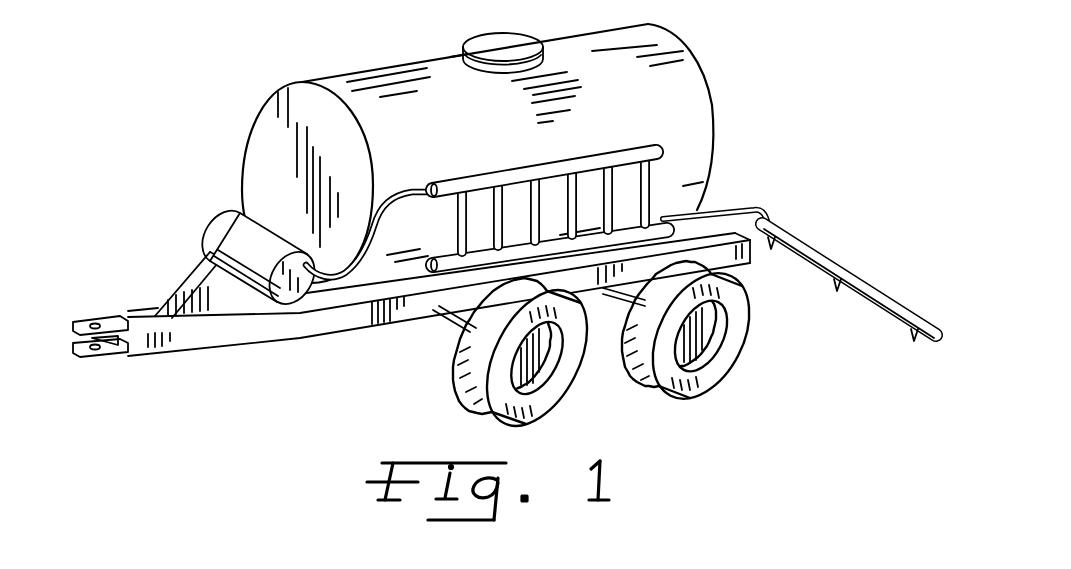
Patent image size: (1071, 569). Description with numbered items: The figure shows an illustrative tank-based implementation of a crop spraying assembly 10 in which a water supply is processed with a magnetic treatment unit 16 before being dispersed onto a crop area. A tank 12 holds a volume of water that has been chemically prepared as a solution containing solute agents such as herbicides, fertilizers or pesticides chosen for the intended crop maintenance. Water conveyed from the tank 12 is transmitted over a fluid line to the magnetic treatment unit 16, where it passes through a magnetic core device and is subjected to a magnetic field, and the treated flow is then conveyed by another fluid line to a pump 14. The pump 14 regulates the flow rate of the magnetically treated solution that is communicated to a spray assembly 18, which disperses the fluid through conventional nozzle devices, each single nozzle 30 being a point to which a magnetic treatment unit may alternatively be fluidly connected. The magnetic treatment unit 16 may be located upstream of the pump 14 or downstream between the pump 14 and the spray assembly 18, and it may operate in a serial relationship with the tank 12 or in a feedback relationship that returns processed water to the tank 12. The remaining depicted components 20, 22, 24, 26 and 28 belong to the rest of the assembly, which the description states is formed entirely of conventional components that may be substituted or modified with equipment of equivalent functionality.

The sprayer trailer 10 is at (742, 69).
The tank 12 is at (393, 88).
The pump 14 is at (233, 236).
The magnetic treatment unit 16 is at (672, 180).
The spray assembly 18 is at (820, 227).
The frame tongue 20 is at (223, 333).
The hitch 22 is at (80, 362).
The hose 24 is at (364, 272).
The supply line 26 is at (757, 210).
The nozzle 28 is at (880, 305).
The nozzle 30 is at (914, 341).